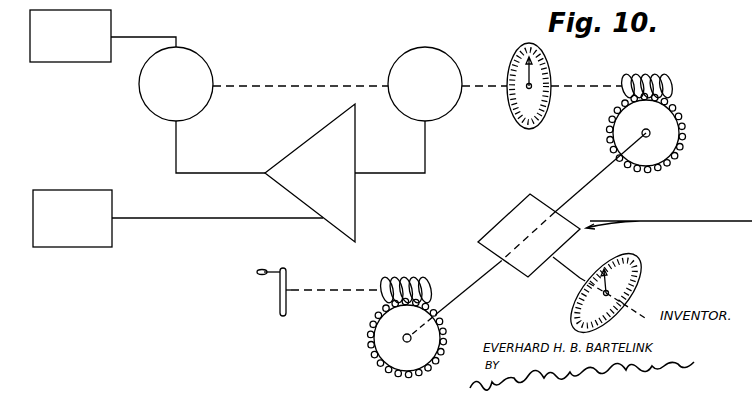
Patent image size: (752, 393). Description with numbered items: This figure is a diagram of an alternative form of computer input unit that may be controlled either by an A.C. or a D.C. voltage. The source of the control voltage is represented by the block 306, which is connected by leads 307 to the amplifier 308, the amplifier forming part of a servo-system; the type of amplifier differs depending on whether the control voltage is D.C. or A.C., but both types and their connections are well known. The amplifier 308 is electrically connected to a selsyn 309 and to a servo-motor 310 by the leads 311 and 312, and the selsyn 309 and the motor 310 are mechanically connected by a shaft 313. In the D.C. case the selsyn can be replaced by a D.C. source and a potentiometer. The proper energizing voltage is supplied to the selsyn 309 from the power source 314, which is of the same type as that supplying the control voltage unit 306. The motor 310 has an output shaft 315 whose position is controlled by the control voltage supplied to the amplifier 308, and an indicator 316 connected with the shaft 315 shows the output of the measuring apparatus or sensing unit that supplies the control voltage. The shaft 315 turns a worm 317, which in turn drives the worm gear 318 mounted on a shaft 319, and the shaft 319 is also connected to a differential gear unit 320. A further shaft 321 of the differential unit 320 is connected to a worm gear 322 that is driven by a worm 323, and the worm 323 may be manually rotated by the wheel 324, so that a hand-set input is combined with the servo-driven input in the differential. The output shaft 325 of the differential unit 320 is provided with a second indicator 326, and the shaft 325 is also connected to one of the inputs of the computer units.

The control voltage source 306 is at (66, 252).
The leads 307 is at (186, 218).
The amplifier 308 is at (356, 208).
The selsyn 309 is at (205, 61).
The servo-motor 310 is at (390, 66).
The lead 311 is at (214, 172).
The lead 312 is at (379, 173).
The shaft 313 is at (281, 86).
The power source 314 is at (61, 62).
The output shaft 315 is at (478, 86).
The indicator 316 is at (553, 76).
The worm 317 is at (670, 84).
The worm gear 318 is at (688, 118).
The shaft 319 is at (580, 190).
The differential gear unit 320 is at (510, 214).
The shaft 321 is at (461, 287).
The worm gear 322 is at (370, 333).
The worm 323 is at (403, 280).
The wheel 324 is at (297, 282).
The output shaft 325 is at (573, 275).
The indicator 326 is at (637, 270).